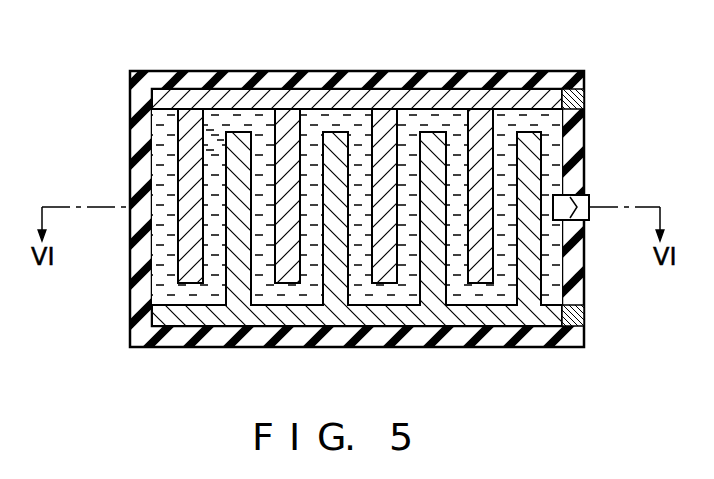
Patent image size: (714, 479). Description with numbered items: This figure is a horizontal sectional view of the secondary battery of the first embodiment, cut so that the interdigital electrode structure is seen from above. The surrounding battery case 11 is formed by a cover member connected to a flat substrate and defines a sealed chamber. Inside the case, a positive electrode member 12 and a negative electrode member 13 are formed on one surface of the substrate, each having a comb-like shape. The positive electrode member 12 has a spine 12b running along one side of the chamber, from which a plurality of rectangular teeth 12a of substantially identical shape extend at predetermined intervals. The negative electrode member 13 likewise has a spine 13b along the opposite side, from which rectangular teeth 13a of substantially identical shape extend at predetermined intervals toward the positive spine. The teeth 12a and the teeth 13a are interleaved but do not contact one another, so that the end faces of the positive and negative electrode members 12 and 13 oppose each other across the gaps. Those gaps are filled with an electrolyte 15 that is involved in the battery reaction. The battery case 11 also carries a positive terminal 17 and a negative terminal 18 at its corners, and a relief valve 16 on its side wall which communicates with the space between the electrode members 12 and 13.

The battery case 11 is at (472, 71).
The positive electrode member 12 is at (188, 100).
The teeth 12a is at (188, 148).
The spine 12b is at (318, 98).
The negative electrode member 13 is at (195, 312).
The teeth 13a is at (242, 138).
The spine 13b is at (347, 305).
The electrolyte 15 is at (212, 135).
The relief valve 16 is at (585, 194).
The positive terminal 17 is at (585, 95).
The negative terminal 18 is at (585, 312).